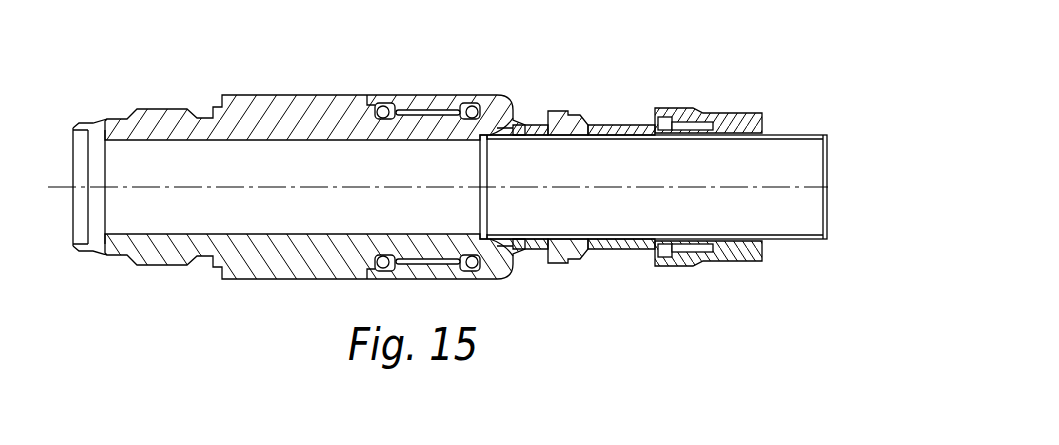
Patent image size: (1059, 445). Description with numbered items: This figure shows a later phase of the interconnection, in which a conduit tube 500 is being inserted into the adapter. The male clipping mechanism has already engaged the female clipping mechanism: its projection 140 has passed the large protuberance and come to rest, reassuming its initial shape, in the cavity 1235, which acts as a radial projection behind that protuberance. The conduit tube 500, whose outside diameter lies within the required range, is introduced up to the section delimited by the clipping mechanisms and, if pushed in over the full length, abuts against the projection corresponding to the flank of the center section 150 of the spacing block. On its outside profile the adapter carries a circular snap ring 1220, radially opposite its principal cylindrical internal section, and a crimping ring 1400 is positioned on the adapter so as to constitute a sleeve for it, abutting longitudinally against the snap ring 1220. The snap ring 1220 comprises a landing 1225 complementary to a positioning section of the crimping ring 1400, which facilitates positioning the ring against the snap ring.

The center section 150 is at (440, 245).
The projection 140 is at (500, 242).
The conduit tube 500 is at (585, 238).
The circular snap ring 1220 is at (558, 108).
The landing 1225 is at (580, 118).
The cavity 1235 is at (513, 263).
The crimping ring 1400 is at (708, 211).